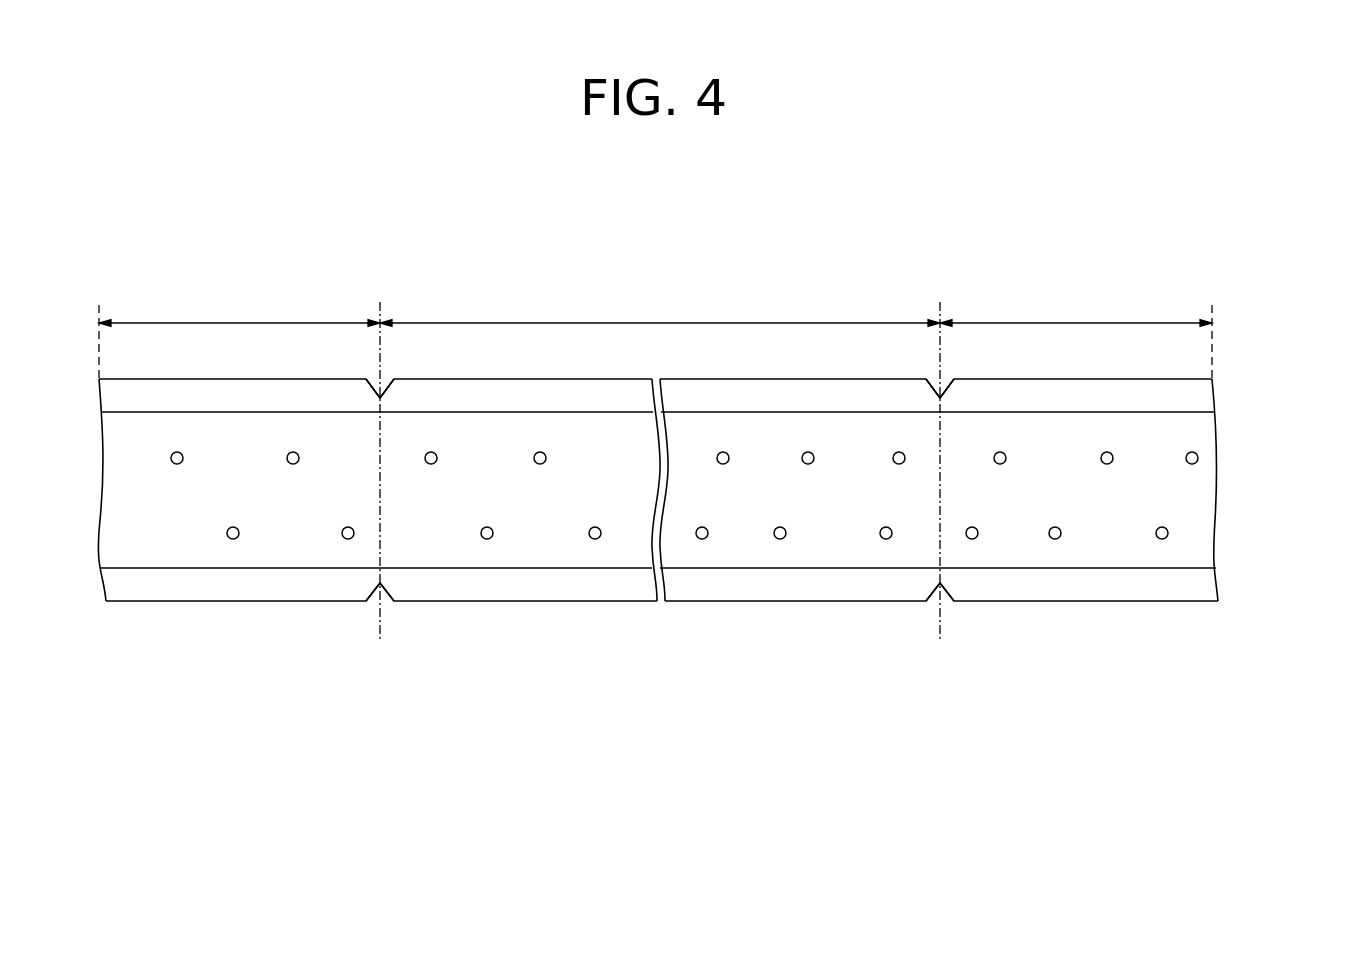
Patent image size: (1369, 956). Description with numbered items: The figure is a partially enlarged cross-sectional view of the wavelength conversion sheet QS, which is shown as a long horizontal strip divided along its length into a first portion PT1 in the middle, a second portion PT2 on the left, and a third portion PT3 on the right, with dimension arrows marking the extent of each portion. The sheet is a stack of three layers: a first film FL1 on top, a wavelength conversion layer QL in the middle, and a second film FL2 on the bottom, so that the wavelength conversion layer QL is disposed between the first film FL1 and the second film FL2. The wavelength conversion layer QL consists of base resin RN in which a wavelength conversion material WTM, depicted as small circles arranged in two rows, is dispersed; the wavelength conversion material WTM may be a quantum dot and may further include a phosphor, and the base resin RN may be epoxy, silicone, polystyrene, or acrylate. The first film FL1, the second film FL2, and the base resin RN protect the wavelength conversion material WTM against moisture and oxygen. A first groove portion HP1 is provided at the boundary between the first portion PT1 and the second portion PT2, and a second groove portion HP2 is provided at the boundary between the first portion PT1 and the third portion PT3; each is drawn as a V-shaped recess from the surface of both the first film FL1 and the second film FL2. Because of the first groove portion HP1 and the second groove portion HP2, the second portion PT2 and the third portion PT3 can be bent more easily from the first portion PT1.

The wavelength conversion sheet QS is at (1176, 266).
The first film FL1 is at (1200, 399).
The second film FL2 is at (1203, 586).
The wavelength conversion layer QL is at (724, 475).
The wavelength conversion material WTM is at (1198, 458).
The base resin RN is at (1203, 501).
The first groove portion HP1 is at (390, 374).
The second groove portion HP2 is at (950, 374).
The first portion PT1 is at (661, 323).
The second portion PT2 is at (222, 323).
The third portion PT3 is at (1092, 323).